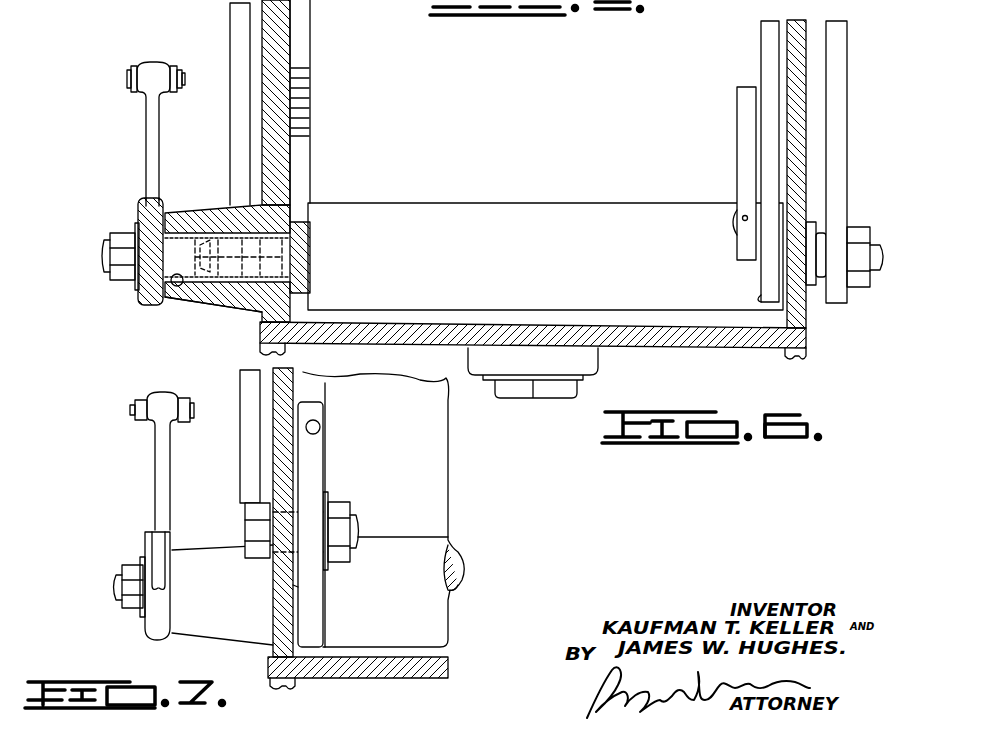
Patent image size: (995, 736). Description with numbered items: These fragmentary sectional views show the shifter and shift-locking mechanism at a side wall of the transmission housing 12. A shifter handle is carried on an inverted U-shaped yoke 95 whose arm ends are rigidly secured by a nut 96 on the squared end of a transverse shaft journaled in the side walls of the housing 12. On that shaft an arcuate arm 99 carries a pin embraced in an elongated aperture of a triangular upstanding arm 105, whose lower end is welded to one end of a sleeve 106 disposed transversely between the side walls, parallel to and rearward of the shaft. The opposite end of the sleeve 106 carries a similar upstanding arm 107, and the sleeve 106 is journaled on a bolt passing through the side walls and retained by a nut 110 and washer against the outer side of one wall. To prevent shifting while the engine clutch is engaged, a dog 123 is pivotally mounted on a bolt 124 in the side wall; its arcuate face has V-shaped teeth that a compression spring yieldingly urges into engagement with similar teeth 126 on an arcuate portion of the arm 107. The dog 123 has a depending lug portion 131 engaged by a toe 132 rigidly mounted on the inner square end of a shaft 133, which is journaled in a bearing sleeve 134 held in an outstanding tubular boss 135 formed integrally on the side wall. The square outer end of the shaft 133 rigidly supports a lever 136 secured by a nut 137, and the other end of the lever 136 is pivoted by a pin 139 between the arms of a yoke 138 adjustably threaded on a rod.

In FIG. 6, the transmission housing 12 is at (262, 33).
In FIG. 7, the transmission housing 12 is at (273, 598).
In FIG. 6, the yoke 95 is at (830, 72).
In FIG. 7, the yoke 95 is at (250, 385).
In FIG. 6, the nut 96 is at (858, 240).
In FIG. 6, the arcuate arm 99 is at (745, 117).
In FIG. 6, the upstanding arm 105 is at (770, 33).
In FIG. 6, the sleeve 106 is at (545, 300).
In FIG. 7, the sleeve 106 is at (383, 509).
In FIG. 6, the upstanding arm 107 is at (312, 14).
In FIG. 7, the upstanding arm 107 is at (318, 382).
In FIG. 6, the nut 110 is at (815, 295).
In FIG. 7, the dog 123 is at (313, 478).
In FIG. 7, the bolt 124 is at (257, 552).
In FIG. 6, the teeth 126 is at (300, 122).
In FIG. 7, the depending lug portion 131 is at (308, 618).
In FIG. 6, the toe 132 is at (300, 224).
In FIG. 6, the shaft 133 is at (275, 253).
In FIG. 7, the shaft 133 is at (120, 590).
In FIG. 6, the bearing sleeve 134 is at (178, 290).
In FIG. 6, the tubular boss 135 is at (212, 305).
In FIG. 7, the tubular boss 135 is at (203, 625).
In FIG. 6, the lever 136 is at (146, 168).
In FIG. 7, the lever 136 is at (160, 490).
In FIG. 6, the nut 137 is at (125, 282).
In FIG. 7, the nut 137 is at (130, 608).
In FIG. 6, the yoke 138 is at (172, 62).
In FIG. 6, the pin 139 is at (184, 80).
In FIG. 7, the pin 139 is at (135, 412).